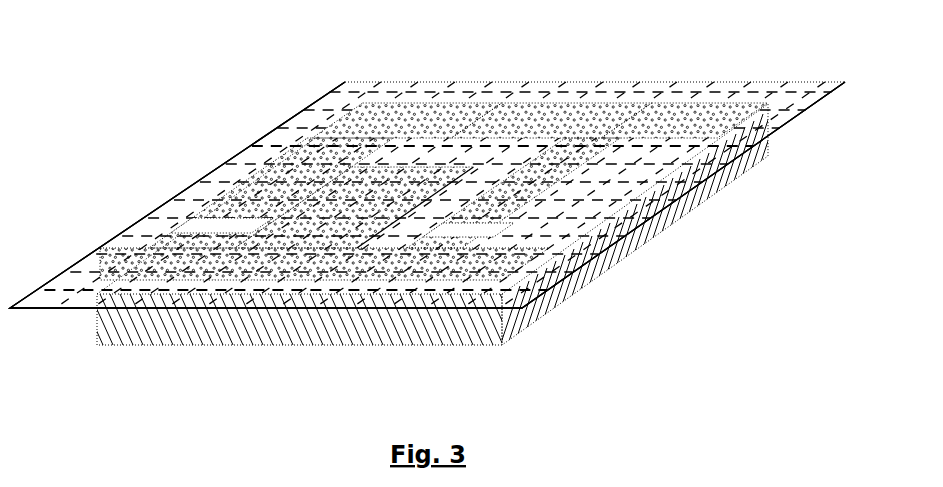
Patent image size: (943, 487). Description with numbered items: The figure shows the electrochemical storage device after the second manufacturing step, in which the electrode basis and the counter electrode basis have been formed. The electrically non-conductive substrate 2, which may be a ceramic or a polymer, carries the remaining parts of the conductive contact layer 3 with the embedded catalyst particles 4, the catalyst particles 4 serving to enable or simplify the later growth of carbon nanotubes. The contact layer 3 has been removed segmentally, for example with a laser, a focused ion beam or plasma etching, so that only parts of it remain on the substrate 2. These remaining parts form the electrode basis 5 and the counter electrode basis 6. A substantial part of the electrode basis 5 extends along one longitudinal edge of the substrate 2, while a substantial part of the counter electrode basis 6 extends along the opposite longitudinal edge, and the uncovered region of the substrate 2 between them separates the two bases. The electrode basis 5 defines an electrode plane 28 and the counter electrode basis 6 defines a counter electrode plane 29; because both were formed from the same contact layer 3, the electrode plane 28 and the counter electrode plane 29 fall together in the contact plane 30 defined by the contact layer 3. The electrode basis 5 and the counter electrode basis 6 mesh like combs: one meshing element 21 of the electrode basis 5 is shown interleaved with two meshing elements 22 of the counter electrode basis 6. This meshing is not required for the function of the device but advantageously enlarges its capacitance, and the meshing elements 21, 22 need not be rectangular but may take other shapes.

The substrate 2 is at (297, 333).
The contact layer 3 is at (450, 115).
The catalyst particles 4 is at (725, 113).
The electrode basis 5 is at (157, 252).
The counter electrode basis 6 is at (638, 110).
The meshing element 21 is at (390, 177).
The meshing elements 22 is at (550, 173).
The electrode plane 28 is at (202, 192).
The counter electrode plane 29 is at (202, 192).
The contact plane 30 is at (202, 192).